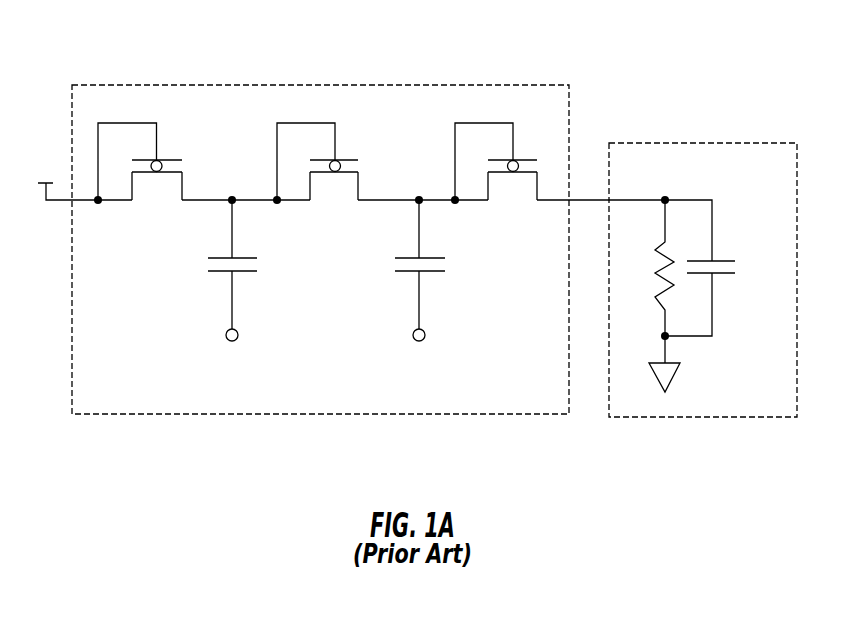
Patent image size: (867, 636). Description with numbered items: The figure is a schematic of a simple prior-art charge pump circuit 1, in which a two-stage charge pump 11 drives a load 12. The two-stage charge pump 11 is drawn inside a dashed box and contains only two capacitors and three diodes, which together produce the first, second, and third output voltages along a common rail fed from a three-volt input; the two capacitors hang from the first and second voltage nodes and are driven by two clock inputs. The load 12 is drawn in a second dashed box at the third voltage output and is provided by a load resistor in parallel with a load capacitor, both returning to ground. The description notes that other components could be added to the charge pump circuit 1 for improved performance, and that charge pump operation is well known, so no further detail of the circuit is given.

The charge pump circuit 1 is at (157, 33).
The two-stage charge pump 11 is at (305, 85).
The load 12 is at (703, 143).